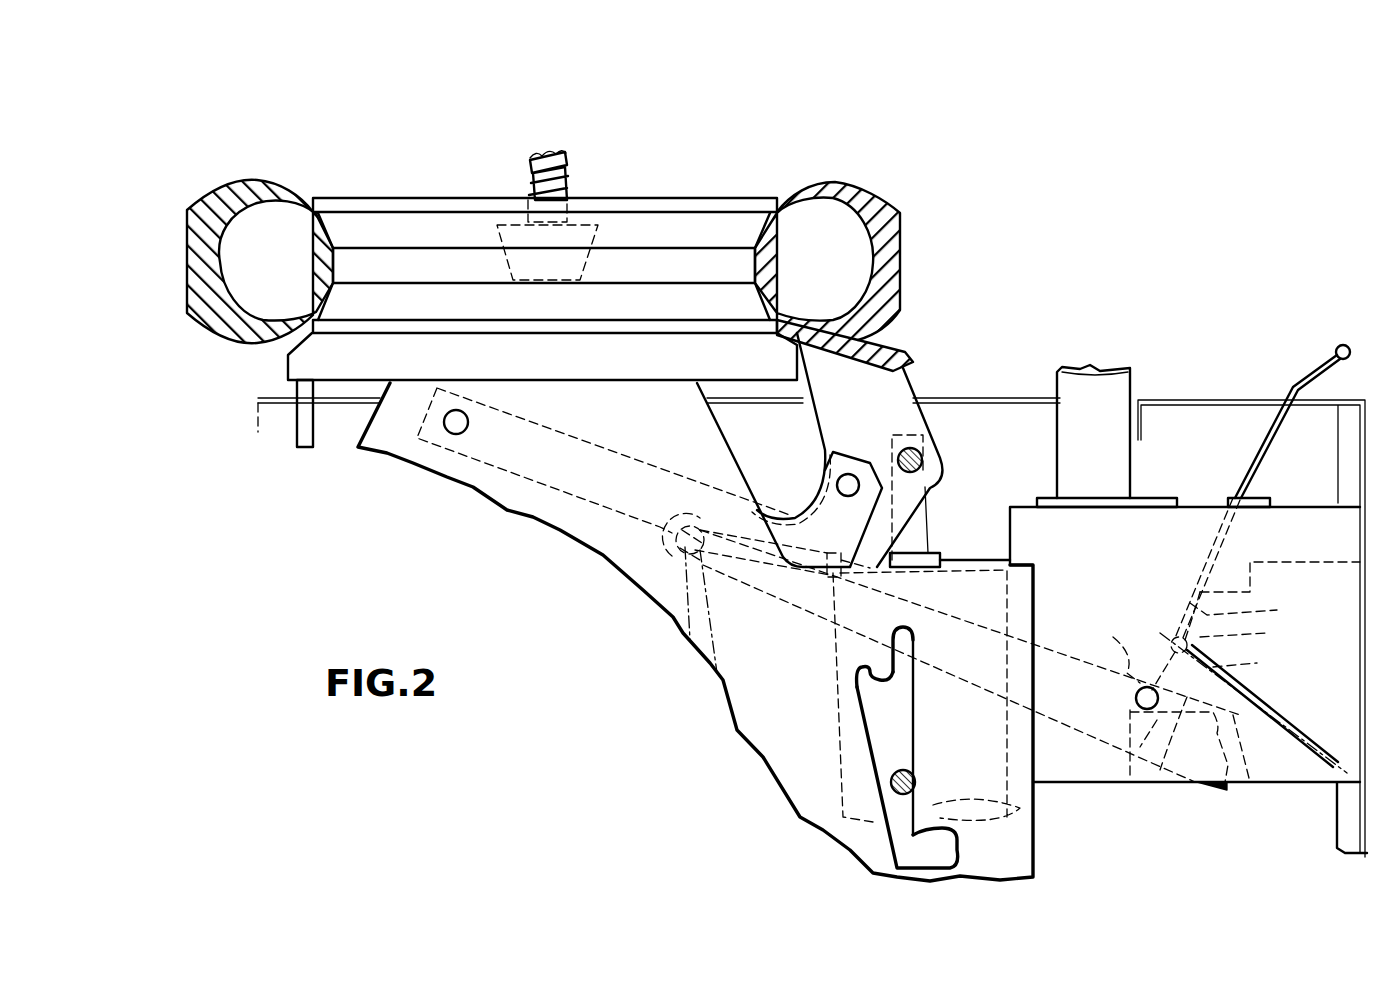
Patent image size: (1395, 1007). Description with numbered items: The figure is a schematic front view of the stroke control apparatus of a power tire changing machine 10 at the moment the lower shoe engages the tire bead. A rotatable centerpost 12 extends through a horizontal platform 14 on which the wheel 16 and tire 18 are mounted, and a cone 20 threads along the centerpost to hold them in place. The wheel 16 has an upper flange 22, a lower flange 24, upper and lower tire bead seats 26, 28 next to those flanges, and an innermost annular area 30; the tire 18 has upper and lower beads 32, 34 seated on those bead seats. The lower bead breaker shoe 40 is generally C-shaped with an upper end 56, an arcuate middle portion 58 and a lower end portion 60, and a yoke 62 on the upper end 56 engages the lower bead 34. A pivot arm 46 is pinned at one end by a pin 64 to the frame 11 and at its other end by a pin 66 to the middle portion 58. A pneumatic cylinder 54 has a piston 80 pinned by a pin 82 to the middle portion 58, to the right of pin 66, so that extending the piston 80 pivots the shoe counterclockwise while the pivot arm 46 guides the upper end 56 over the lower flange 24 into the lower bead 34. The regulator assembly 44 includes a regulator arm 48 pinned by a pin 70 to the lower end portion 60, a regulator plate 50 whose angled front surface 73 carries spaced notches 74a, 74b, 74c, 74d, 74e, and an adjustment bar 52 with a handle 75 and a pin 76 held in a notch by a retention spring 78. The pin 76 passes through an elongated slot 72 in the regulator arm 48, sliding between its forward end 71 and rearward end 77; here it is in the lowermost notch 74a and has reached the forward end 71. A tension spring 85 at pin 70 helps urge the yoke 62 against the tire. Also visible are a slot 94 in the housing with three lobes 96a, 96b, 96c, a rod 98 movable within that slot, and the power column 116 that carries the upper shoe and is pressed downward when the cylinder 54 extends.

The power tire changing machine 10 is at (1195, 193).
The frame 11 is at (352, 447).
The rotatable centerpost 12 is at (538, 158).
The horizontal platform 14 is at (497, 371).
The wheel 16 is at (565, 227).
The tire 18 is at (260, 236).
The cone 20 is at (497, 232).
The upper flange 22 is at (707, 200).
The lower flange 24 is at (662, 322).
The upper tire bead seat 26 is at (834, 276).
The lower tire bead seat 28 is at (790, 313).
The innermost annular area 30 is at (765, 267).
The upper bead 32 is at (312, 221).
The lower bead 34 is at (315, 308).
The lower bead breaker shoe 40 is at (1172, 585).
The regulator assembly 44 is at (628, 668).
The pivot arm 46 is at (695, 632).
The regulator arm 48 is at (1055, 630).
The regulator plate 50 is at (1352, 668).
The adjustment bar 52 is at (1284, 406).
The pneumatic cylinder 54 is at (837, 722).
The upper end 56 is at (872, 383).
The arcuate middle portion 58 is at (822, 450).
The lower end portion 60 is at (663, 548).
The yoke 62 is at (780, 353).
The pin 64 is at (443, 423).
The pin 66 is at (841, 485).
The pin 70 is at (660, 572).
The forward end 71 is at (1115, 652).
The elongated slot 72 is at (1173, 770).
The angled front surface 73 is at (1181, 581).
The notch 74a is at (1122, 757).
The notch 74b is at (1256, 667).
The notch 74c is at (1249, 633).
The notch 74d is at (1251, 610).
The notch 74e is at (1280, 582).
The handle 75 is at (1320, 368).
The pin 76 is at (1134, 698).
The rearward end 77 is at (1247, 787).
The retention spring 78 is at (1293, 712).
The piston 80 is at (935, 513).
The pin 82 is at (925, 458).
The tension spring 85 is at (680, 645).
The slot 94 is at (902, 747).
The lobe 96a is at (852, 685).
The lobe 96b is at (918, 640).
The lobe 96c is at (962, 850).
The rod 98 is at (912, 775).
The power column 116 is at (1095, 385).